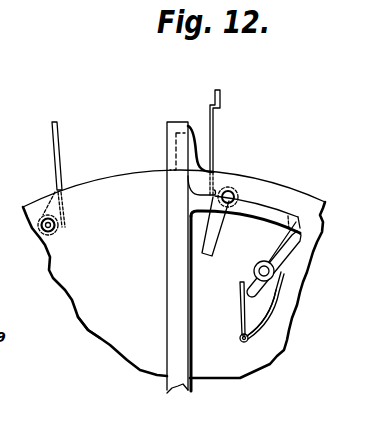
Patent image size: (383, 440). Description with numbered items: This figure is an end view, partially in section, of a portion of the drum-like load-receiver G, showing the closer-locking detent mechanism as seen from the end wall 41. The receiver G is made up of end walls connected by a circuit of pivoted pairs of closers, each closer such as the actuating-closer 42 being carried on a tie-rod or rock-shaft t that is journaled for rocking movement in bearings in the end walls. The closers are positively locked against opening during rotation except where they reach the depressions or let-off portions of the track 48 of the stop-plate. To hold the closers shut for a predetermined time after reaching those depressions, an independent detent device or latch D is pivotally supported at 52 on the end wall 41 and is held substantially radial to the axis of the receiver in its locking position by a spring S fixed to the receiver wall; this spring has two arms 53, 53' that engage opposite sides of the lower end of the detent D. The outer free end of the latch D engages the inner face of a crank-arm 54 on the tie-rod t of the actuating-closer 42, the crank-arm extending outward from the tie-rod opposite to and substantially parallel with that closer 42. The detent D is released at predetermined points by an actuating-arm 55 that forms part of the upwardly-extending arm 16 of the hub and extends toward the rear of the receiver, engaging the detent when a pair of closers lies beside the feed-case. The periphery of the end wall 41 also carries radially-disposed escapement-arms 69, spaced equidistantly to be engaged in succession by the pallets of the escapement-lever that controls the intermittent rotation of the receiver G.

The upwardly-extending arm 16 is at (168, 258).
The end wall 41 is at (92, 316).
The actuating-closer 42 is at (53, 153).
The track 48 is at (214, 130).
The pivot 52 is at (257, 267).
The spring arm 53 is at (225, 312).
The spring arm 53' is at (279, 315).
The crank-arm 54 is at (213, 228).
The actuating-arm 55 is at (272, 210).
The escapement-arm 69 is at (197, 153).
The tie-rod t is at (231, 191).
The load-receiver G is at (174, 290).
The detent device D is at (274, 264).
The spring S is at (265, 305).